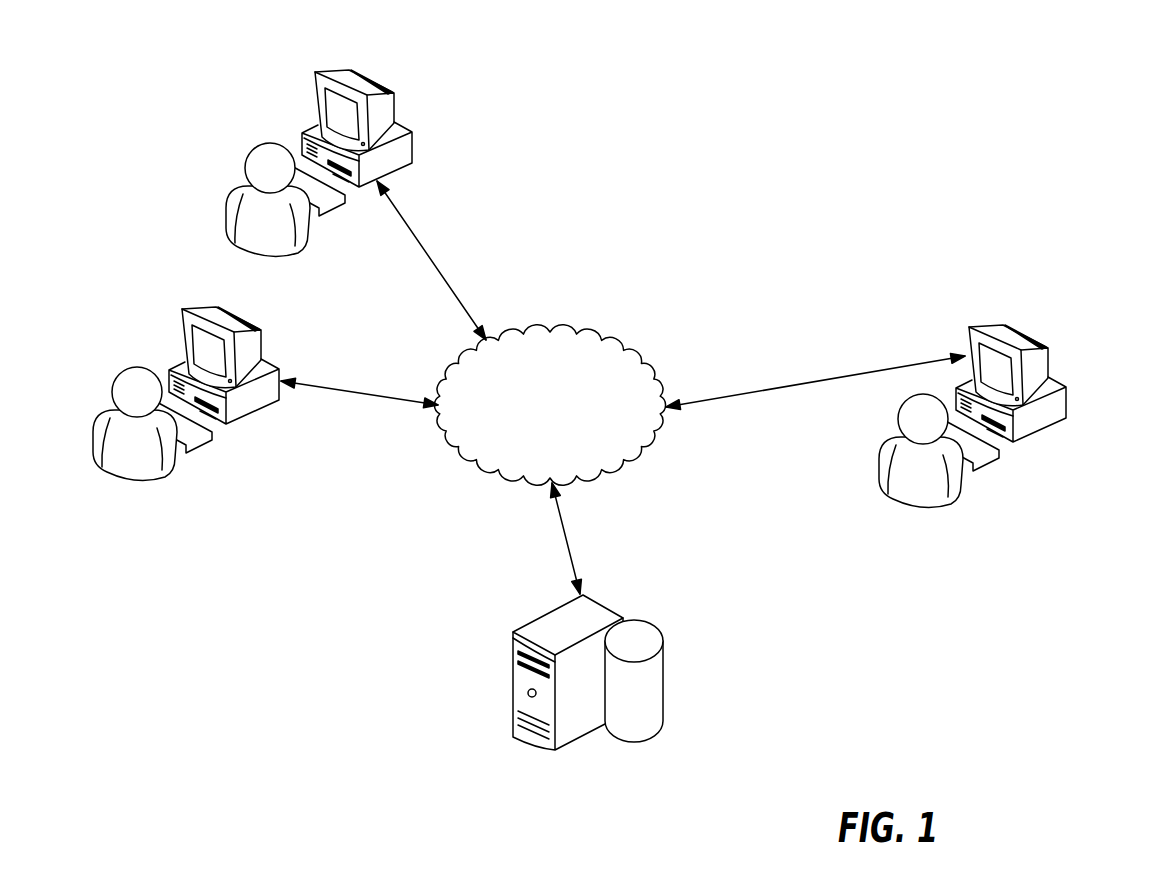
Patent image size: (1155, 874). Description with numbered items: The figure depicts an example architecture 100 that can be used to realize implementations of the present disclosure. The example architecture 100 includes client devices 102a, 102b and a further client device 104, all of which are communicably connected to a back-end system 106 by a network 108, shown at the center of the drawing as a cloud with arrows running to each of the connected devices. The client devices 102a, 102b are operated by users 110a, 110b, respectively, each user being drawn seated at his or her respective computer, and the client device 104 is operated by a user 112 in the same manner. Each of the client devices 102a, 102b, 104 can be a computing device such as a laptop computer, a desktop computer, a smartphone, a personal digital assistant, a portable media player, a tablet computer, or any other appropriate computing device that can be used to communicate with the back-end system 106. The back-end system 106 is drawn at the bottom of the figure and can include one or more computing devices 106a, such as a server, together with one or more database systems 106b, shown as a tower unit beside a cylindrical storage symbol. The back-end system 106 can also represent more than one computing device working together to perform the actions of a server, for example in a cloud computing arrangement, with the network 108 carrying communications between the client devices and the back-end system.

The example architecture 100 is at (857, 66).
The client device 102a is at (315, 95).
The client device 102b is at (180, 319).
The client device 104 is at (1026, 326).
The back-end system 106 is at (599, 636).
The computing device 106a is at (513, 675).
The database system 106b is at (663, 677).
The network 108 is at (552, 333).
The user 110a is at (246, 163).
The user 110b is at (113, 378).
The user 112 is at (882, 473).